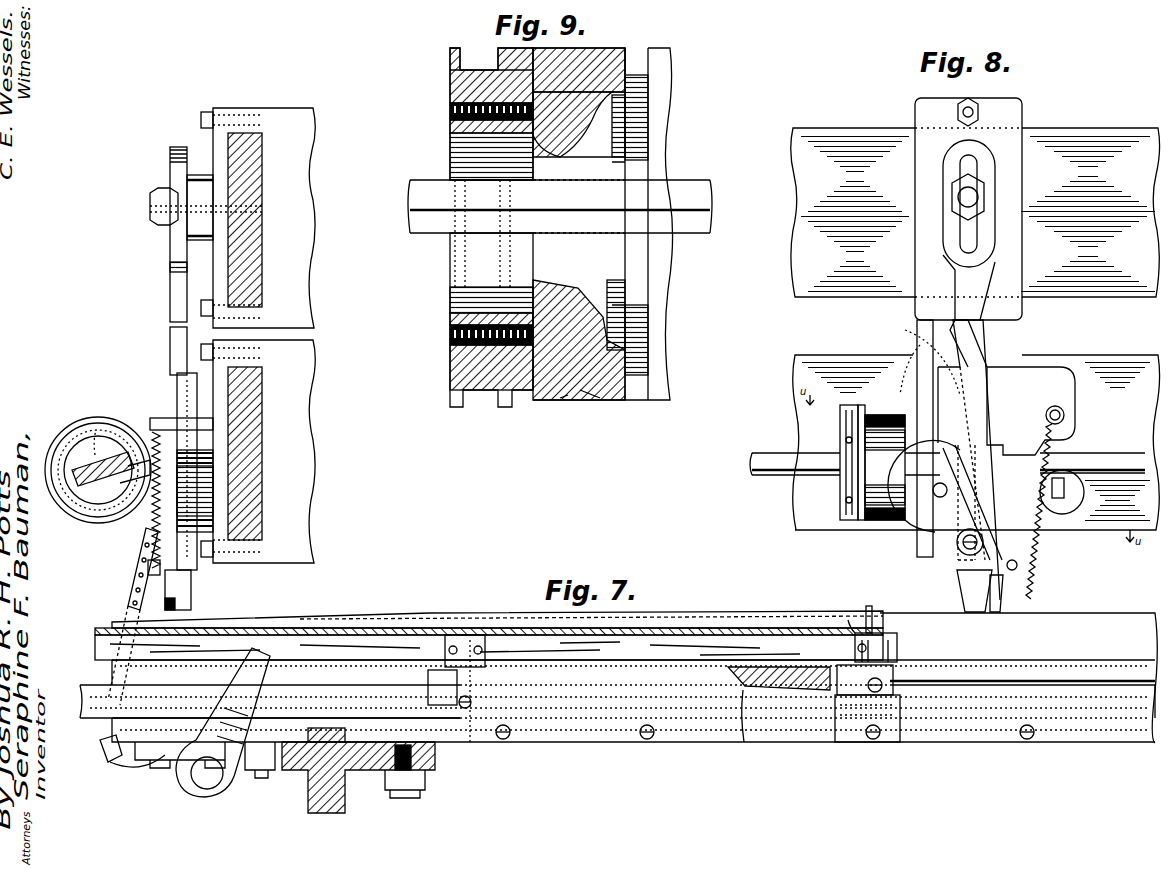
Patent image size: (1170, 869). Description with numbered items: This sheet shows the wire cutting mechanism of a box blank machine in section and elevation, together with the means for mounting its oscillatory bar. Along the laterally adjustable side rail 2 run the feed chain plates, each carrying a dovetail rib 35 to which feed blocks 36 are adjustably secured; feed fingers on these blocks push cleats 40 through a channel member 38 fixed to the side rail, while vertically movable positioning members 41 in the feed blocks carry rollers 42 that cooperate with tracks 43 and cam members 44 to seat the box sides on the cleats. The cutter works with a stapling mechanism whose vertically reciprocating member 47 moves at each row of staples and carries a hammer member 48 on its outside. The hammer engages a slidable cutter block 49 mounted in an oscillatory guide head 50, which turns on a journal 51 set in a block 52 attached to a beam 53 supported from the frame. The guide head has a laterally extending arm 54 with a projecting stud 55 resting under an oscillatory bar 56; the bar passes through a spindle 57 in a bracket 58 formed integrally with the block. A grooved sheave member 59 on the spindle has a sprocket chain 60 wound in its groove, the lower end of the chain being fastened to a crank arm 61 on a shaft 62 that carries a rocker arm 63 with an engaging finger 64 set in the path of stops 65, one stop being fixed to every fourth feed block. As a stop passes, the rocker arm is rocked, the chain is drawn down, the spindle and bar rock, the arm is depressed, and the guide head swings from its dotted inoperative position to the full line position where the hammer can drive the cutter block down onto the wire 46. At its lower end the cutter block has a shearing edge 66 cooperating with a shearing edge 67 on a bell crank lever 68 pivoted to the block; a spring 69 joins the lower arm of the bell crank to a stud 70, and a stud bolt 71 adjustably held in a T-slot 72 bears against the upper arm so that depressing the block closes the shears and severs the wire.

In FIG. 7, the side rail 2 is at (1080, 738).
In FIG. 7, the dovetail rib 35 is at (617, 701).
In FIG. 7, the feed block 36 is at (920, 666).
In FIG. 7, the channel member 38 is at (1010, 676).
In FIG. 7, the cleat 40 is at (489, 647).
In FIG. 7, the positioning member 41 is at (874, 616).
In FIG. 7, the roller 42 is at (466, 710).
In FIG. 7, the track 43 is at (930, 695).
In FIG. 7, the cam member 44 is at (777, 690).
In FIG. 7, the wire 46 is at (362, 630).
In FIG. 7, the vertically reciprocating member 47 is at (248, 262).
In FIG. 8, the vertically reciprocating member 47 is at (975, 212).
In FIG. 7, the hammer member 48 is at (172, 250).
In FIG. 8, the hammer member 48 is at (950, 232).
In FIG. 7, the cutter block 49 is at (178, 345).
In FIG. 8, the cutter block 49 is at (965, 370).
In FIG. 8, the oscillatory guide head 50 is at (900, 350).
In FIG. 8, the journal 51 is at (985, 475).
In FIG. 8, the block 52 is at (1012, 385).
In FIG. 7, the beam 53 is at (248, 440).
In FIG. 8, the beam 53 is at (976, 442).
In FIG. 8, the laterally extending arm 54 is at (1062, 490).
In FIG. 7, the stud 55 is at (100, 488).
In FIG. 8, the stud 55 is at (1068, 510).
In FIG. 7, the oscillatory bar 56 is at (92, 455).
In FIG. 8, the oscillatory bar 56 is at (775, 462).
In FIG. 9, the oscillatory bar 56 is at (685, 195).
In FIG. 7, the spindle 57 is at (92, 505).
In FIG. 9, the spindle 57 is at (612, 258).
In FIG. 7, the bracket 58 is at (150, 420).
In FIG. 8, the bracket 58 is at (885, 467).
In FIG. 9, the bracket 58 is at (574, 400).
In FIG. 8, the grooved sheave member 59 is at (850, 505).
In FIG. 9, the grooved sheave member 59 is at (450, 92).
In FIG. 7, the sprocket chain 60 is at (150, 548).
In FIG. 8, the sprocket chain 60 is at (845, 415).
In FIG. 7, the crank arm 61 is at (133, 768).
In FIG. 7, the shaft 62 is at (216, 783).
In FIG. 7, the rocker arm 63 is at (190, 760).
In FIG. 7, the engaging finger 64 is at (300, 628).
In FIG. 7, the stop 65 is at (858, 630).
In FIG. 7, the shearing edge 66 is at (185, 598).
In FIG. 8, the shearing edge 66 is at (960, 598).
In FIG. 8, the shearing edge 67 is at (1004, 598).
In FIG. 7, the bell crank lever 68 is at (150, 585).
In FIG. 8, the bell crank lever 68 is at (970, 545).
In FIG. 7, the spring 69 is at (168, 450).
In FIG. 8, the spring 69 is at (1022, 545).
In FIG. 7, the stud 70 is at (128, 470).
In FIG. 8, the stud 70 is at (1046, 414).
In FIG. 8, the stud bolt 71 is at (920, 508).
In FIG. 8, the T-slot 72 is at (920, 490).